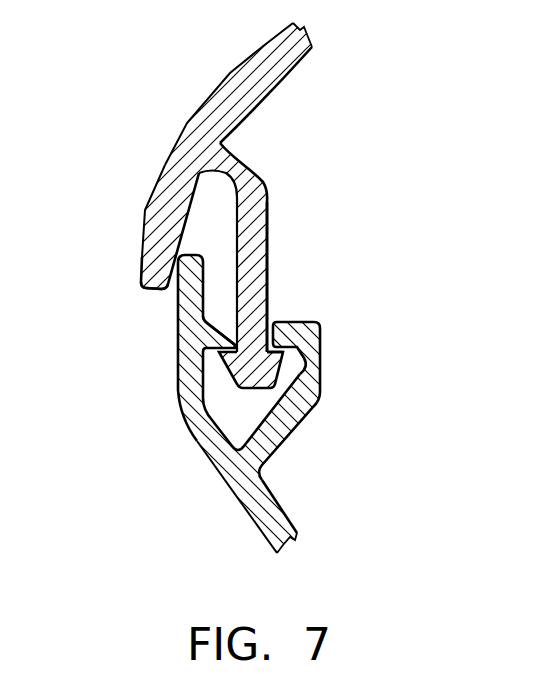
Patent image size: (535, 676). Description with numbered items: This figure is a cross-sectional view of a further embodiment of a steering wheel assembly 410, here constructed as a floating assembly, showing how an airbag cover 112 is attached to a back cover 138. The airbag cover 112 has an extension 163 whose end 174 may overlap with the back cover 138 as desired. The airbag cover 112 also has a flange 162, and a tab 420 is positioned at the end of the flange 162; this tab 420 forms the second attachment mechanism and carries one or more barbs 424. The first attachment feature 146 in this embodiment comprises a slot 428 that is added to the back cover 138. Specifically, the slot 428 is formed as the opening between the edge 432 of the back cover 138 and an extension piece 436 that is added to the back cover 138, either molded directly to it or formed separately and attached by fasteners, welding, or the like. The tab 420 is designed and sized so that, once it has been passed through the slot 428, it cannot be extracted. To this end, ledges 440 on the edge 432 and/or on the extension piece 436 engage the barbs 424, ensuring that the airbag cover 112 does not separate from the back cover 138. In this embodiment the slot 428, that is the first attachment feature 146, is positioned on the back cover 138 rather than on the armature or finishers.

The airbag cover 112 is at (221, 88).
The extension 163 is at (160, 196).
The end of the extension 174 is at (153, 288).
The tab 420 is at (268, 200).
The steering wheel assembly 410 is at (300, 230).
The flange 162 is at (268, 282).
The first attachment feature 146 is at (284, 314).
The ledges 440 is at (224, 338).
The extension piece 436 is at (312, 363).
The barbs 424 is at (320, 398).
The slot 428 is at (220, 341).
The edge of the back cover 432 is at (205, 362).
The back cover 138 is at (275, 517).